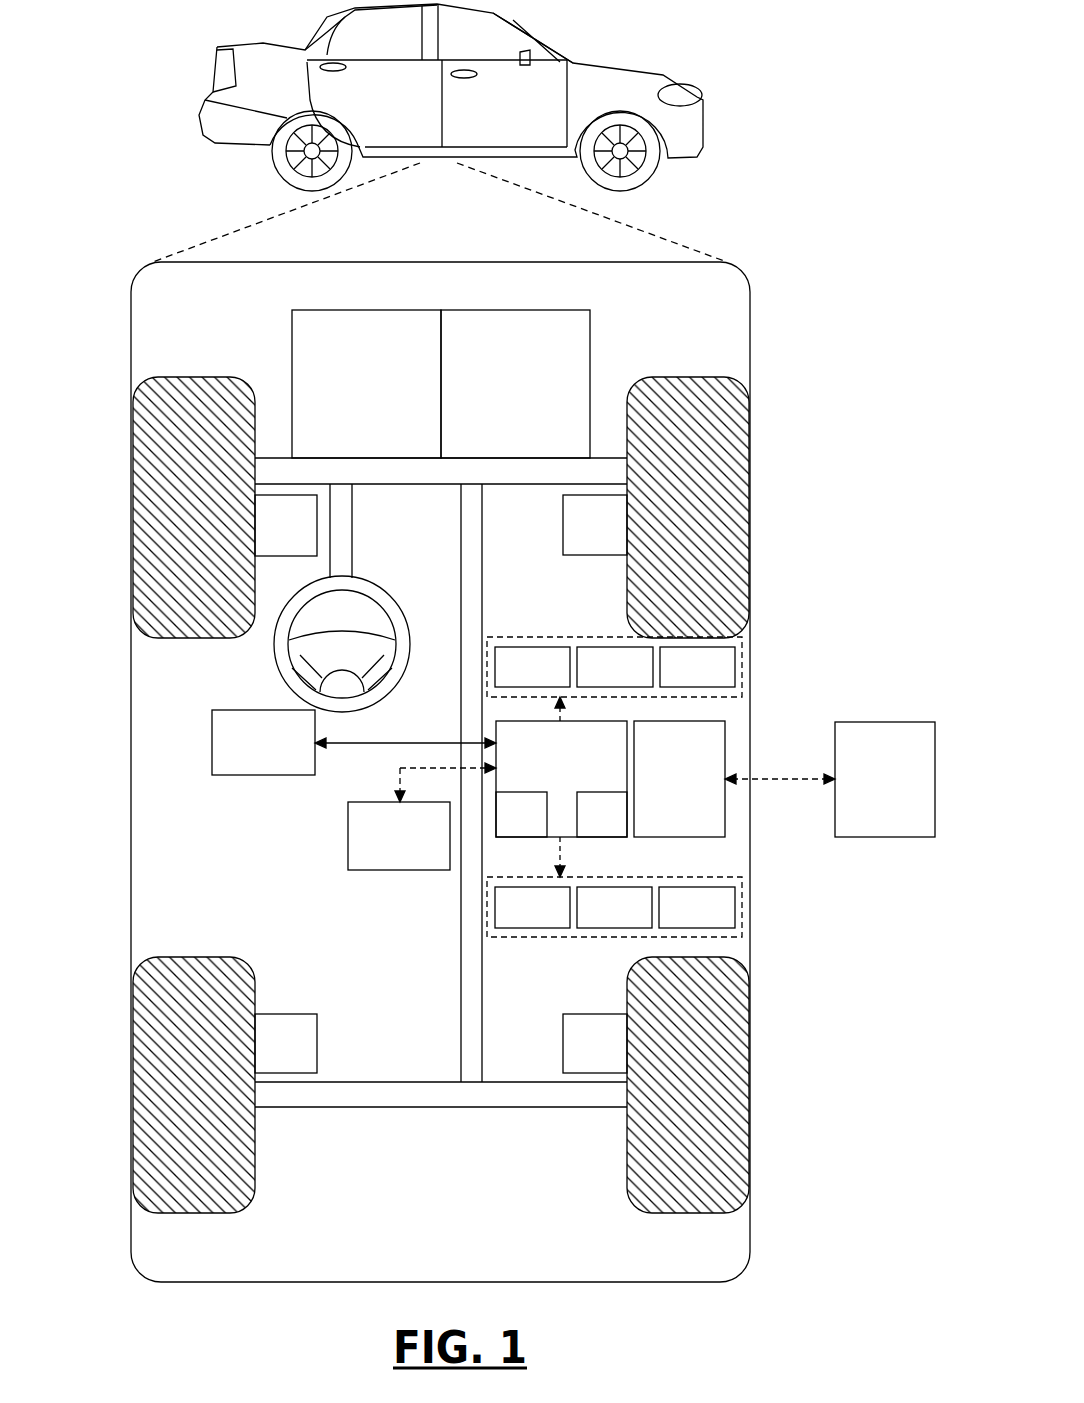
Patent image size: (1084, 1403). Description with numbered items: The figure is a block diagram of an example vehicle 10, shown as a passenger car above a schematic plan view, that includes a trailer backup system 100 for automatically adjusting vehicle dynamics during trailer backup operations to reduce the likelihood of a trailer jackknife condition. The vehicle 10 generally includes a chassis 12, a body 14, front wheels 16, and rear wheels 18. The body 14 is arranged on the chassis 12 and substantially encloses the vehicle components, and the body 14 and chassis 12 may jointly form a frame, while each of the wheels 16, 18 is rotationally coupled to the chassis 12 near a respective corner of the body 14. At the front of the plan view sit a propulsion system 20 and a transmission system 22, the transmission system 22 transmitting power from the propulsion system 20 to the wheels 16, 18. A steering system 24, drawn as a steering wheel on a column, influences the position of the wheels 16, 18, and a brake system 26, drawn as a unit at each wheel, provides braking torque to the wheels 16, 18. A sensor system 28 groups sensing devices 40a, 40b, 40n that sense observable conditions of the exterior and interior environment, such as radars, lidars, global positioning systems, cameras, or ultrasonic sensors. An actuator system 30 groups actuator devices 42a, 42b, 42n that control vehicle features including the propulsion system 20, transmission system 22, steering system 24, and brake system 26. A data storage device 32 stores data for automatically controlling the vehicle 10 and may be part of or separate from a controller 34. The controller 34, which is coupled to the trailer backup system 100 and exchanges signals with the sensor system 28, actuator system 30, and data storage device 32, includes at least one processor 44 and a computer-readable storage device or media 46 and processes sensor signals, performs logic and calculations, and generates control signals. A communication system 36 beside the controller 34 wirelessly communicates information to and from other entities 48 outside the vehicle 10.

The vehicle 10 is at (205, 93).
The chassis 12 is at (461, 922).
The body 14 is at (131, 735).
The front wheels 16 is at (193, 377).
The rear wheels 18 is at (193, 1213).
The propulsion system 20 is at (352, 397).
The transmission system 22 is at (501, 397).
The steering system 24 is at (360, 552).
The brake system 26 is at (272, 538).
The sensor system 28 is at (576, 636).
The actuator system 30 is at (580, 939).
The data storage device 32 is at (385, 848).
The controller 34 is at (547, 770).
The communication system 36 is at (665, 791).
The sensing device 40a is at (511, 680).
The sensing device 40b is at (594, 680).
The sensing device 40n is at (676, 680).
The actuator device 42a is at (511, 920).
The actuator device 42b is at (593, 920).
The actuator device 42n is at (676, 920).
The processor 44 is at (507, 827).
The computer-readable storage device or media 46 is at (588, 827).
The other entities 48 is at (871, 791).
The trailer backup system 100 is at (240, 756).